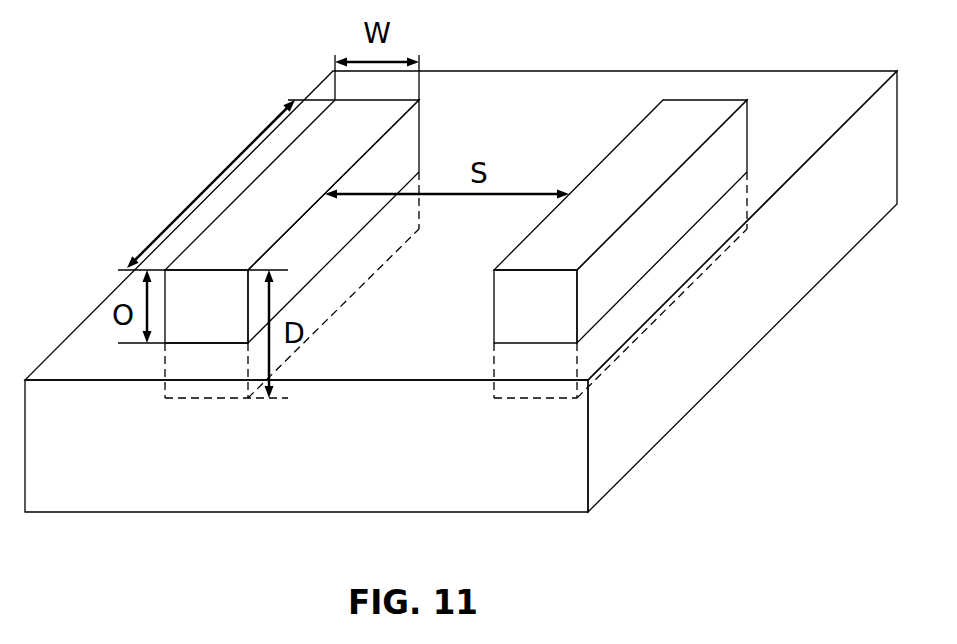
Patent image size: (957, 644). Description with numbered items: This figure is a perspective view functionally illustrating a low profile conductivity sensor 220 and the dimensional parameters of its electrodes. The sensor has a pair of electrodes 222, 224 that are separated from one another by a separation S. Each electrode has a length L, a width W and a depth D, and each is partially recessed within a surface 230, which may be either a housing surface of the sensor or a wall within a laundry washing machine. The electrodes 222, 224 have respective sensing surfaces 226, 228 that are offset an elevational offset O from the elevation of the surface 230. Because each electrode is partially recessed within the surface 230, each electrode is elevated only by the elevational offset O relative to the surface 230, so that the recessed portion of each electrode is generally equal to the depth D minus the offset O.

The low profile conductivity sensor 220 is at (162, 115).
The electrode 222 is at (400, 108).
The electrode 224 is at (712, 98).
The sensing surface 226 is at (320, 152).
The sensing surface 228 is at (647, 155).
The surface 230 is at (540, 78).